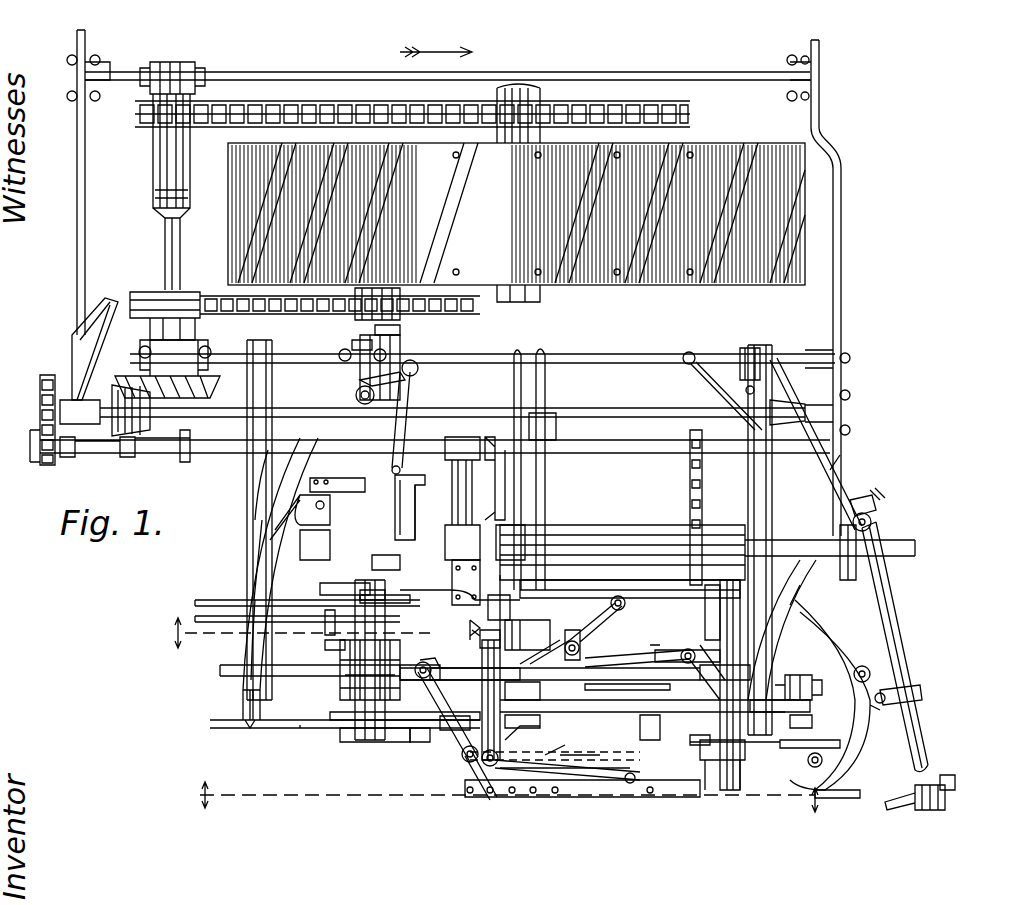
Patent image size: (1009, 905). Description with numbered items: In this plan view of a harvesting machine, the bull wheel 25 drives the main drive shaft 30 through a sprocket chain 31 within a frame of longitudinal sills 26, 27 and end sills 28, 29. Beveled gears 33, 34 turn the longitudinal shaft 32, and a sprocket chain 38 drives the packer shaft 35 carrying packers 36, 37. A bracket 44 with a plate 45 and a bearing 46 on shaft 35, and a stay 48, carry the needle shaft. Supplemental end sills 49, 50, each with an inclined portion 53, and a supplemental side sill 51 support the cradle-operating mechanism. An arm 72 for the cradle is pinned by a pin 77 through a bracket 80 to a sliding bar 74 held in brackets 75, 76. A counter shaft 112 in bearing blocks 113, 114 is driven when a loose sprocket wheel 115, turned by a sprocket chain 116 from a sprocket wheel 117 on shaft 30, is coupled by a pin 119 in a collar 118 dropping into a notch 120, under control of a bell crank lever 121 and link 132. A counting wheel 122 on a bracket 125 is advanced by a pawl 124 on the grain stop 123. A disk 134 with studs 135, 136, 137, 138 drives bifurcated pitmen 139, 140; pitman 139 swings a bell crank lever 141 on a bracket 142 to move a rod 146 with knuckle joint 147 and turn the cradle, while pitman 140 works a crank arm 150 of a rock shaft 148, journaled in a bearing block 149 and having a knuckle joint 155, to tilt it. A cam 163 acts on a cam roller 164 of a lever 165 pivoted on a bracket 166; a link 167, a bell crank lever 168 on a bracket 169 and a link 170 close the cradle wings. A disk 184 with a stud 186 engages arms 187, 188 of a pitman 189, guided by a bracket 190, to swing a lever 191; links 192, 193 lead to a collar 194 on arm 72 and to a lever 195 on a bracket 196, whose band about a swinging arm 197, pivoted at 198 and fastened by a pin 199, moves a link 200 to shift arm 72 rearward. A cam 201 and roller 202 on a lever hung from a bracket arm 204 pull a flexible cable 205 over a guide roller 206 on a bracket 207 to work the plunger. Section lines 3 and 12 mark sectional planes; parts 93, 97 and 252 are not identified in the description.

The section line 3 is at (835, 800).
The section line 12 is at (185, 632).
The bull wheel 25 is at (735, 145).
The longitudinal sill 26 is at (700, 78).
The longitudinal sill 27 is at (712, 355).
The end sill 28 is at (840, 300).
The end sill 29 is at (85, 203).
The main drive shaft 30 is at (163, 250).
The sprocket chain 31 is at (420, 108).
The longitudinal shaft 32 is at (612, 408).
The beveled gear 33 is at (205, 378).
The beveled gear 34 is at (138, 440).
The second longitudinal shaft 35 is at (240, 455).
The packer 36 is at (415, 490).
The packer 37 is at (548, 372).
The sprocket chain 38 is at (40, 405).
The bracket 44 is at (445, 520).
The plate 45 is at (455, 575).
The bearing 46 is at (462, 435).
The stay 48 is at (330, 478).
The supplemental front end sill 49 is at (770, 490).
The supplemental rear end sill 50 is at (250, 486).
The supplemental side sill 51 is at (258, 680).
The inclined portion 53 is at (805, 610).
The arm 72 is at (468, 633).
The sliding bar 74 is at (587, 712).
The bracket 75 is at (812, 688).
The bracket 76 is at (512, 694).
The pin 77 is at (650, 728).
The bracket 80 is at (636, 682).
The clamp 93 is at (505, 528).
The diagonal brace 97 is at (832, 488).
The counter shaft 112 is at (372, 562).
The bearing block 113 is at (350, 350).
The bearing block 114 is at (365, 715).
The sprocket wheel 115 is at (410, 306).
The sprocket chain 116 is at (278, 315).
The sprocket wheel 117 is at (150, 296).
The collar 118 is at (400, 347).
The pin 119 is at (360, 333).
The notch 120 is at (398, 332).
The bell crank lever 121 is at (418, 372).
The counting wheel 122 is at (560, 668).
The grain stop 123 is at (520, 628).
The pawl 124 is at (495, 606).
The bracket 125 is at (510, 570).
The link 132 is at (398, 470).
The disk 134 is at (325, 625).
The stud 135 is at (370, 597).
The stud 136 is at (310, 640).
The stud 137 is at (485, 640).
The stud 138 is at (340, 640).
The bifurcated pitman 139 is at (232, 600).
The bifurcated pitman 140 is at (195, 618).
The bell crank lever 141 is at (625, 668).
The bracket 142 is at (565, 652).
The rod 146 is at (600, 718).
The knuckle joint 147 is at (560, 752).
The rock shaft 148 is at (728, 775).
The bearing block 149 is at (765, 660).
The crank arm 150 is at (690, 645).
The knuckle joint 155 is at (770, 720).
The cam 163 is at (350, 685).
The cam roller 164 is at (345, 720).
The vertically swinging lever 165 is at (462, 708).
The bracket 166 is at (420, 680).
The link 167 is at (495, 672).
The bell crank lever 168 is at (520, 738).
The bracket 169 is at (475, 758).
The link 170 is at (580, 767).
The disk 184 is at (380, 735).
The stud 186 is at (410, 735).
The pitman arm 187 is at (308, 728).
The pitman arm 188 is at (400, 740).
The bifurcated pitman 189 is at (450, 728).
The bracket 190 is at (240, 728).
The lever 191 is at (465, 786).
The link 192 is at (505, 768).
The link 193 is at (810, 738).
The collar 194 is at (715, 745).
The lever 195 is at (858, 745).
The bracket 196 is at (820, 640).
The swinging arm 197 is at (905, 645).
The pivot 198 is at (878, 520).
The pin 199 is at (885, 705).
The link 200 is at (945, 790).
The cam 201 is at (325, 588).
The roller 202 is at (470, 590).
The bracket arm 204 is at (328, 500).
The flexible cable 205 is at (600, 585).
The guide roller 206 is at (690, 642).
The bracket 207 is at (740, 600).
The rack 252 is at (688, 462).